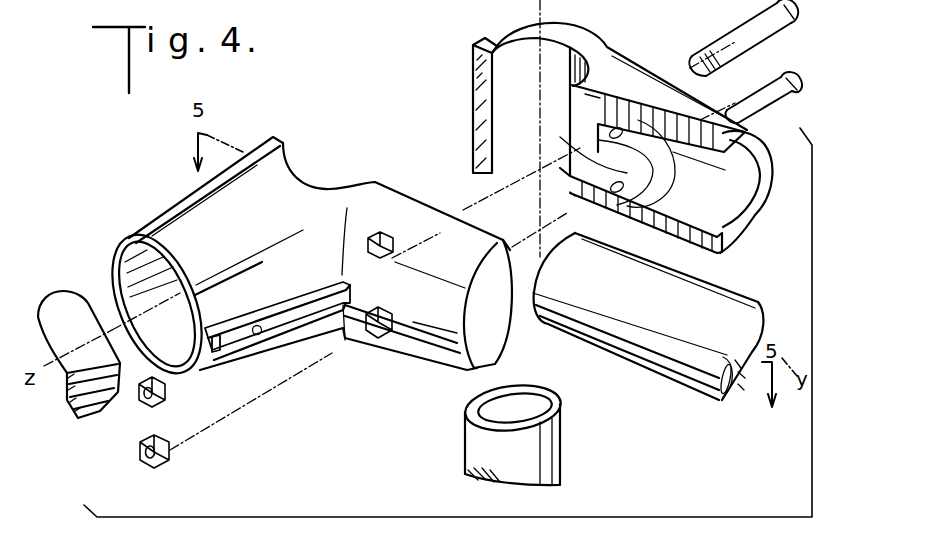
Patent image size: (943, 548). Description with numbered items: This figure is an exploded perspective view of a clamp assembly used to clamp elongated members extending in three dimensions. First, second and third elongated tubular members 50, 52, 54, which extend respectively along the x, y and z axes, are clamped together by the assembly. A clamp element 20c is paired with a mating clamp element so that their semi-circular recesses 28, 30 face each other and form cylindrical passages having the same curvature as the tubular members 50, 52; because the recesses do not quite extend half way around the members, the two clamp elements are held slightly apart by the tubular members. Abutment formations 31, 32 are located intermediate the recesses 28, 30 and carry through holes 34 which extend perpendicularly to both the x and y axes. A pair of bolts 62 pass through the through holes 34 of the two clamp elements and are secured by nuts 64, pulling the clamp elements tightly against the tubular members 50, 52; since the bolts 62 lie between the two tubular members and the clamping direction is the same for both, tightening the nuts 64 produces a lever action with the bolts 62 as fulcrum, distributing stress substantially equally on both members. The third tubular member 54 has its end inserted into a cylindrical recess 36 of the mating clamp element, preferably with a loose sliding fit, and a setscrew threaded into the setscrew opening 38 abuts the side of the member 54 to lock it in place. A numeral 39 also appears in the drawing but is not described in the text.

The clamp element 20c is at (650, 46).
The recess 28 is at (503, 52).
The recess 30 is at (737, 210).
The abutment formation 31 is at (577, 108).
The abutment formation 32 is at (573, 193).
The through holes 34 is at (392, 258).
The cylindrical recess 36 is at (127, 256).
The threaded setscrew opening 38 is at (256, 335).
The rail 39 is at (262, 318).
The first elongated tubular member 50 is at (478, 453).
The second elongated tubular member 52 is at (668, 368).
The third elongated tubular member 54 is at (67, 300).
The bolts 62 is at (753, 40).
The nuts 64 is at (142, 408).